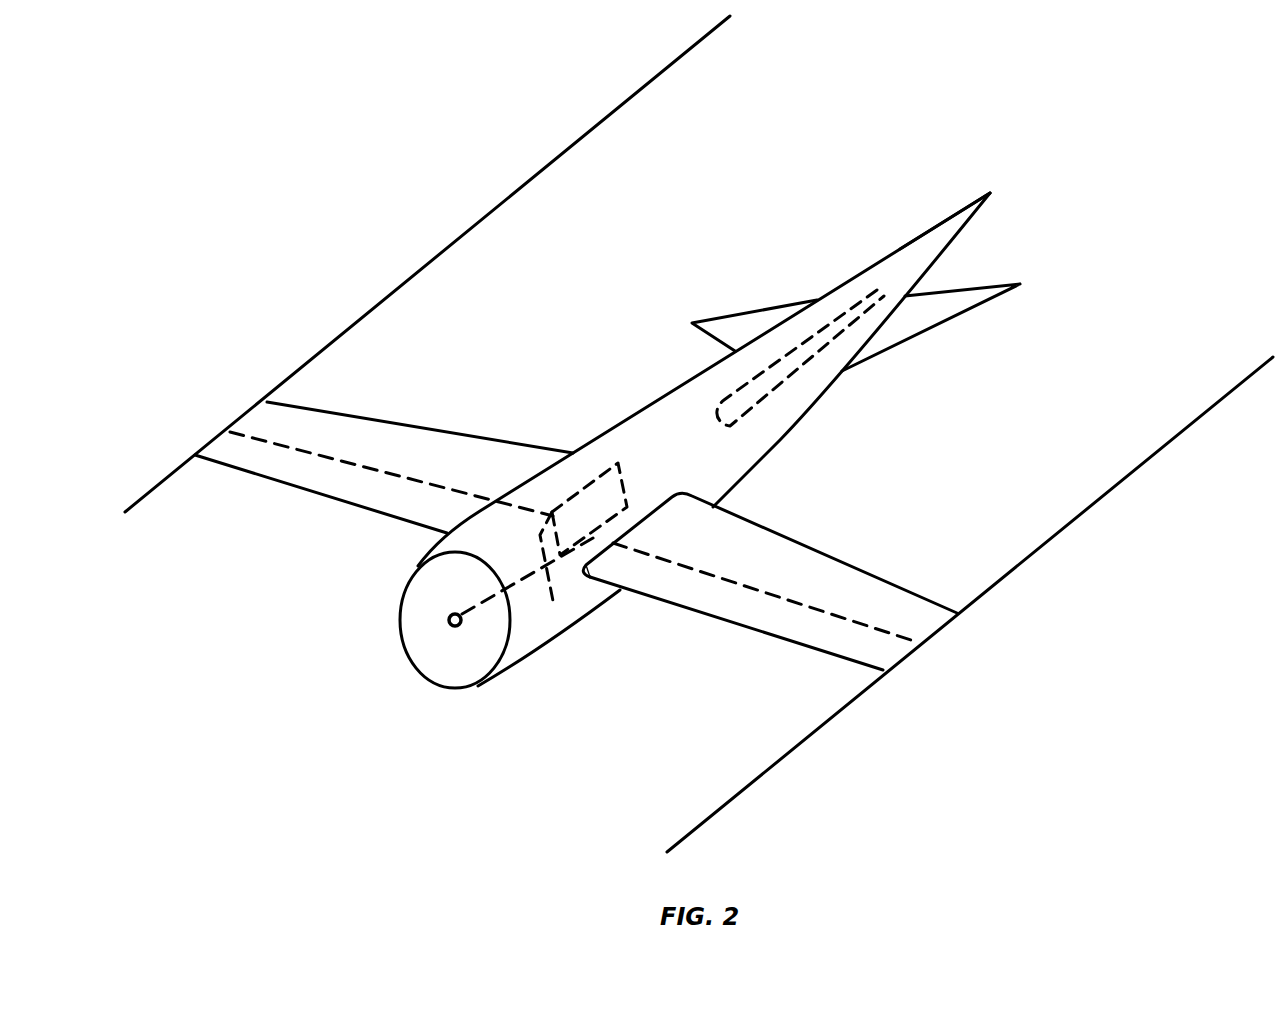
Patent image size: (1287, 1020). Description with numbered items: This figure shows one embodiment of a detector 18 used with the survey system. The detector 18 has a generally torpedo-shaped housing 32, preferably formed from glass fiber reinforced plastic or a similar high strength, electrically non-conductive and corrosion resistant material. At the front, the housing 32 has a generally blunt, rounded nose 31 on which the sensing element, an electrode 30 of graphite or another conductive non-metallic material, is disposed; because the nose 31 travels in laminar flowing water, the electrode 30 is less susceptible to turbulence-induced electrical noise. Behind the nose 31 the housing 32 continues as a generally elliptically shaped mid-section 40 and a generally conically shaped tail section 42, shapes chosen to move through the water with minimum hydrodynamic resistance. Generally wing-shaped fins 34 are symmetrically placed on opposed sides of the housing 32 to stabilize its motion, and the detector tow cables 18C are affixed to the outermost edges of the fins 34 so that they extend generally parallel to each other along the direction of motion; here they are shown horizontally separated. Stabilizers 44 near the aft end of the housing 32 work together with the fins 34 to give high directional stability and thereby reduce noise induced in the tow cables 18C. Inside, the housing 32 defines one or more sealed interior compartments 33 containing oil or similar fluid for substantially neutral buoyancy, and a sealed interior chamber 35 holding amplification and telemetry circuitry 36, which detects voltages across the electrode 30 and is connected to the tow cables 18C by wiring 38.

The detector 18 is at (405, 762).
The detector tow cables 18C is at (163, 480).
The electrode 30 is at (454, 628).
The nose 31 is at (422, 623).
The housing 32 is at (593, 442).
The sealed interior compartments 33 is at (815, 350).
The fins 34 is at (348, 497).
The sealed interior chamber 35 is at (588, 603).
The amplification and telemetry circuitry 36 is at (567, 563).
The wiring 38 is at (373, 472).
The mid-section 40 is at (655, 432).
The tail section 42 is at (908, 257).
The horizontal stabilizers 44 is at (737, 333).